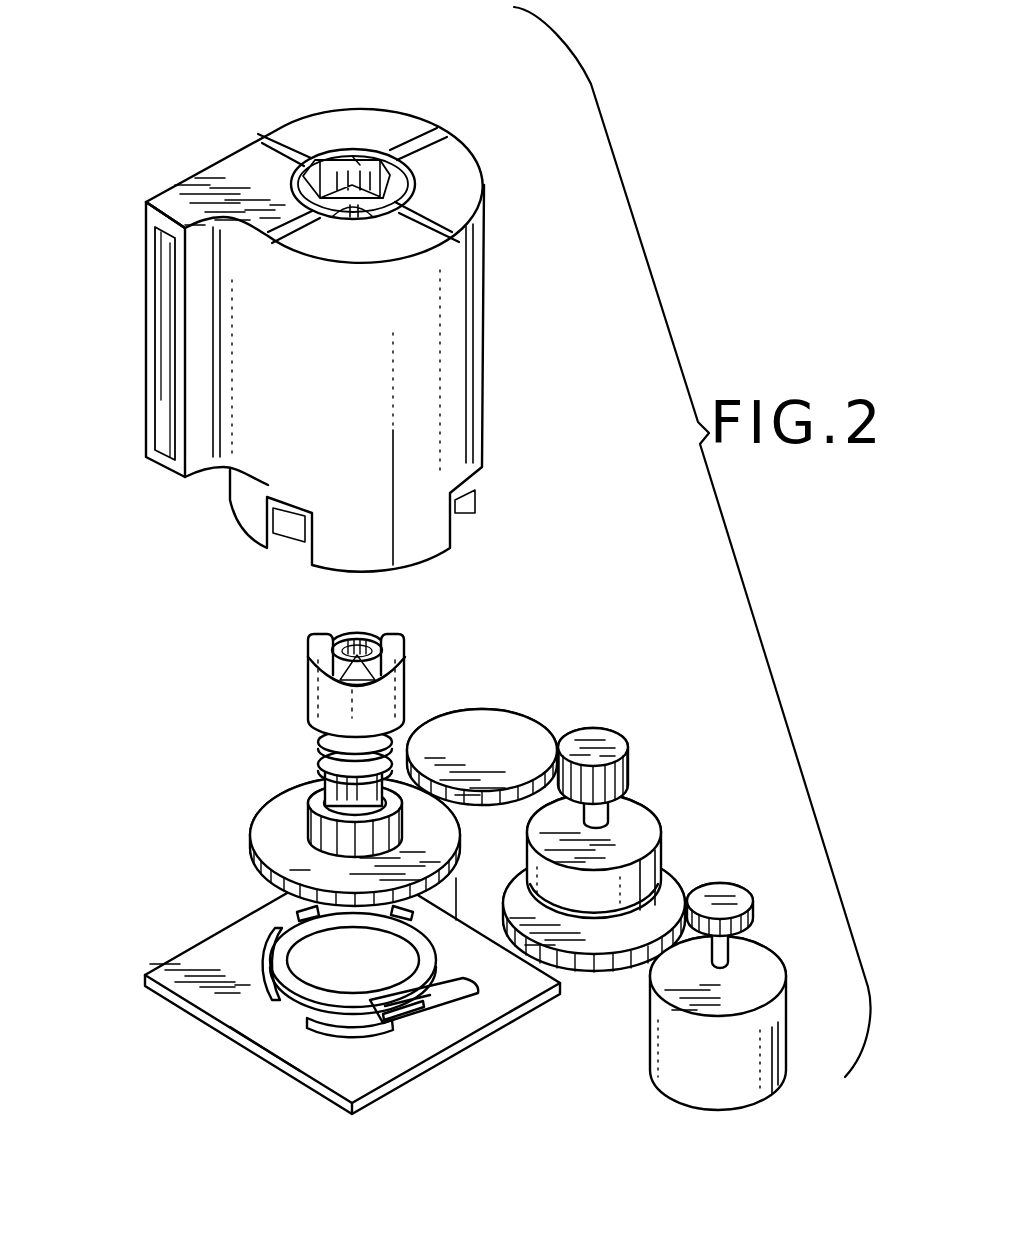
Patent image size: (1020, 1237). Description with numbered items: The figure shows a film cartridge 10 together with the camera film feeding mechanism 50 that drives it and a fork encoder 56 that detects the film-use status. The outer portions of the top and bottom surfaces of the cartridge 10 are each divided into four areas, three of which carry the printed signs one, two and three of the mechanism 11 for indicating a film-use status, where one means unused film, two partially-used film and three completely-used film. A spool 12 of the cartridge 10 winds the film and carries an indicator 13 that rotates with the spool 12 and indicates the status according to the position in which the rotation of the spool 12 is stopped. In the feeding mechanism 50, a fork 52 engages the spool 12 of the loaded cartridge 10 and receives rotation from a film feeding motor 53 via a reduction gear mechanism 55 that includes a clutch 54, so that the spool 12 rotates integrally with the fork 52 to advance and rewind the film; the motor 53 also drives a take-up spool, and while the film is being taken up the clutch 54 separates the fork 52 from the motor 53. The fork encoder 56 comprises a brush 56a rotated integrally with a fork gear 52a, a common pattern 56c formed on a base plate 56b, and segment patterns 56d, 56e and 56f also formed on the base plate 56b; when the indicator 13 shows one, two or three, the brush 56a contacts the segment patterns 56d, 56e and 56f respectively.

The cartridge 10 is at (367, 299).
The mechanism for indicating a film-use status 11 is at (428, 116).
The spool 12 is at (297, 177).
The indicator 13 is at (393, 157).
The camera film feeding mechanism 50 is at (425, 899).
The fork 52 is at (402, 642).
The fork gear 52a is at (262, 838).
The film feeding motor 53 is at (677, 1077).
The clutch 54 is at (663, 863).
The reduction gear mechanism 55 is at (605, 732).
The fork encoder 56 is at (328, 1012).
The brush 56a is at (480, 996).
The base plate 56b is at (230, 1037).
The common pattern 56c is at (288, 962).
The segment pattern 56d is at (383, 1030).
The segment pattern 56e is at (245, 993).
The segment pattern 56f is at (270, 927).